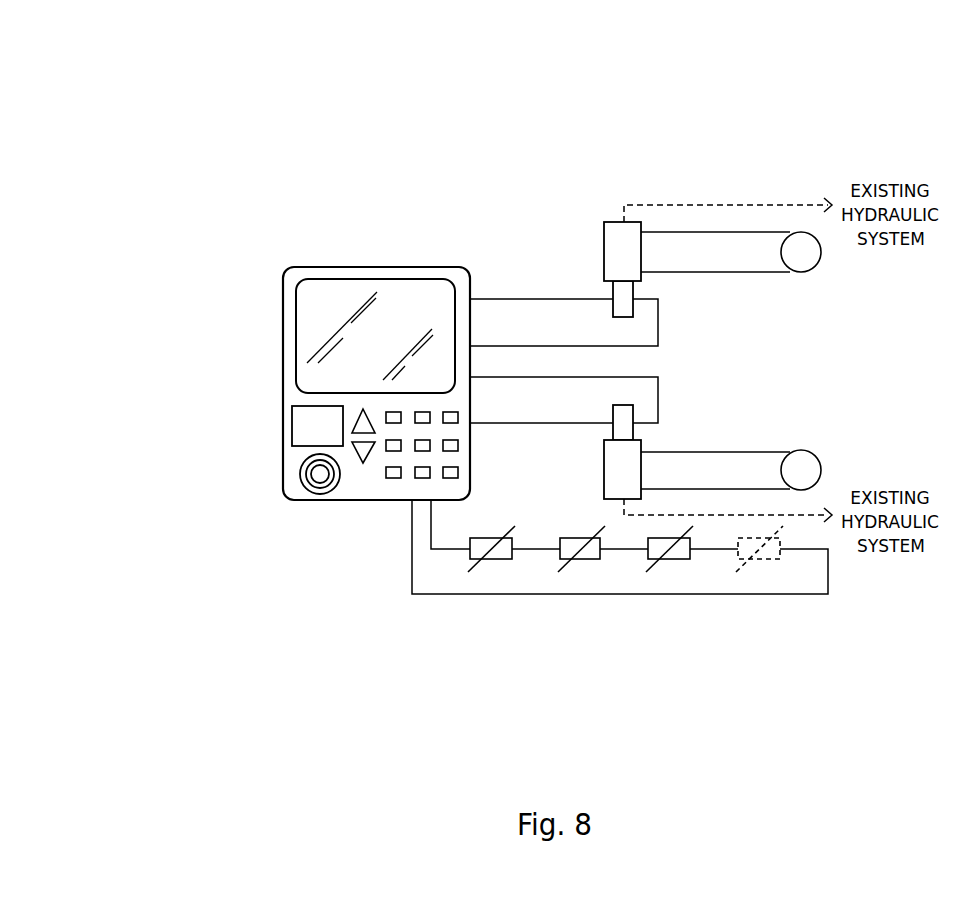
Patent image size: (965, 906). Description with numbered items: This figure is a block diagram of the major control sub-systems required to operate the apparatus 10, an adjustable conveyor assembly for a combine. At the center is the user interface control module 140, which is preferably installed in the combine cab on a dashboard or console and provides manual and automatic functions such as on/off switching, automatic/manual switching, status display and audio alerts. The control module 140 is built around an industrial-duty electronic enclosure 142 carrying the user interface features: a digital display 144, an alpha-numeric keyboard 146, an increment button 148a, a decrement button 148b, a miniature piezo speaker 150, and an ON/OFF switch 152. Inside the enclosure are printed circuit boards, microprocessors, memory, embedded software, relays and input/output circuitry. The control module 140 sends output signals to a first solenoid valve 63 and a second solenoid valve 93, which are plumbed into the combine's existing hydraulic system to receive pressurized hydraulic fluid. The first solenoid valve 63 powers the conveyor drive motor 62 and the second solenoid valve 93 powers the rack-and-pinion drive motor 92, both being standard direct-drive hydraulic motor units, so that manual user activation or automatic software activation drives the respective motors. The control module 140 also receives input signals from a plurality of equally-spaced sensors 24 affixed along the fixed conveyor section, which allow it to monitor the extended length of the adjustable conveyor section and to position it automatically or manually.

The apparatus 10 is at (96, 149).
The sensors 24 is at (495, 560).
The conveyor drive motor 62 is at (809, 270).
The first solenoid valve 63 is at (604, 261).
The rack-and-pinion drive motor 92 is at (815, 456).
The second solenoid valve 93 is at (641, 446).
The user interface control module 140 is at (476, 270).
The electronic enclosure 142 is at (336, 267).
The digital display 144 is at (296, 338).
The alpha-numeric keyboard 146 is at (456, 487).
The increment button 148a is at (362, 428).
The decrement button 148b is at (357, 447).
The miniature piezo speaker 150 is at (308, 484).
The ON/OFF switch 152 is at (292, 427).